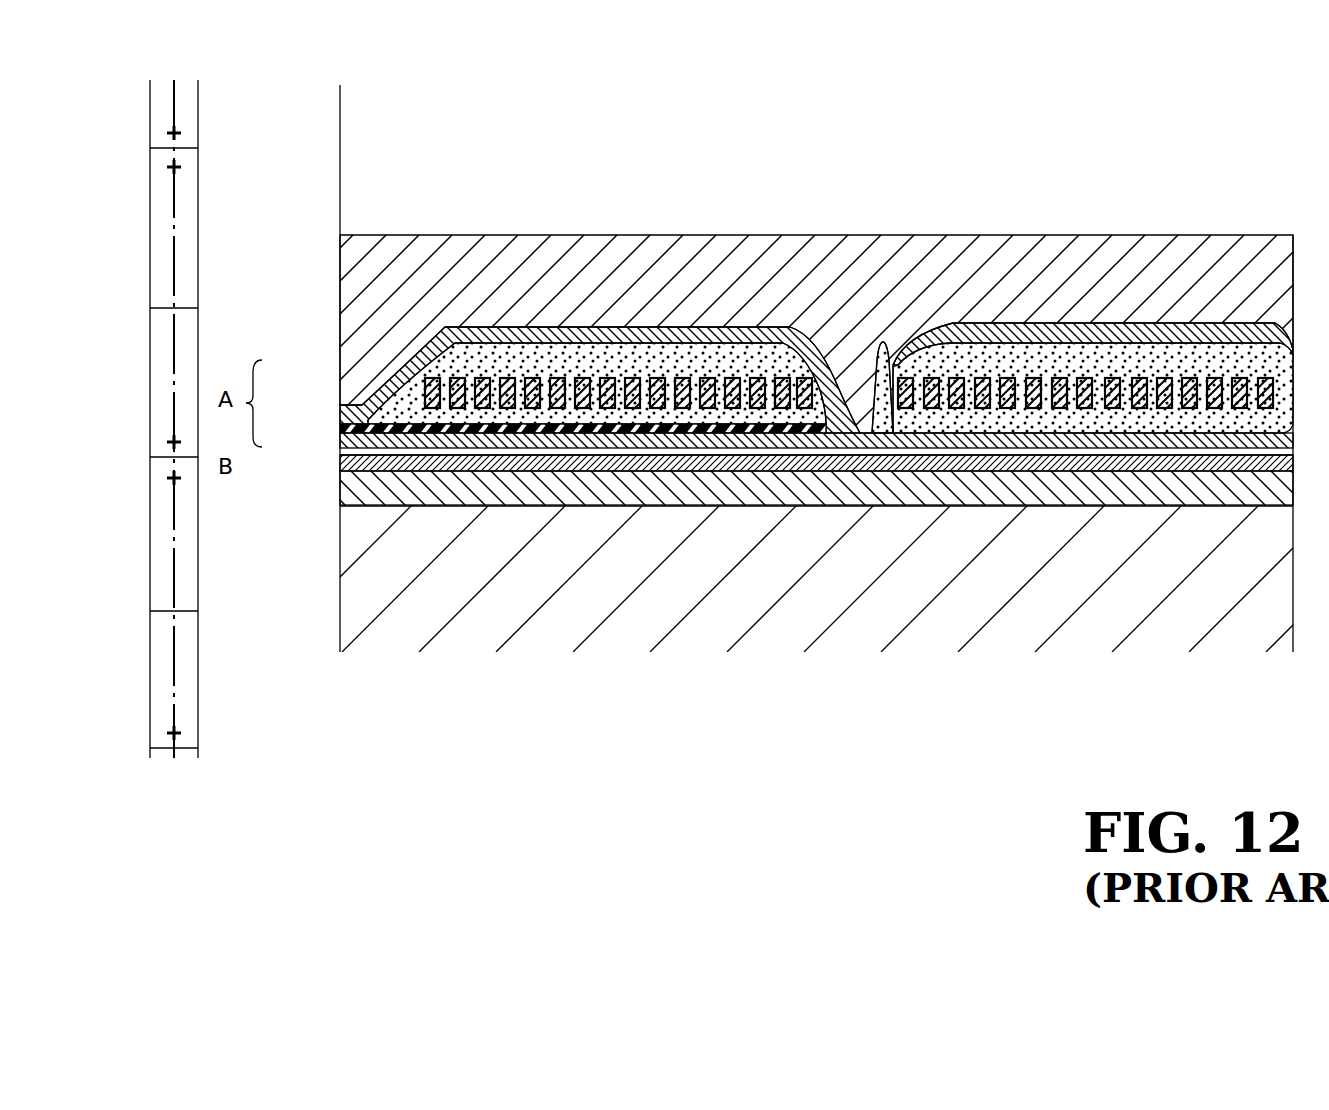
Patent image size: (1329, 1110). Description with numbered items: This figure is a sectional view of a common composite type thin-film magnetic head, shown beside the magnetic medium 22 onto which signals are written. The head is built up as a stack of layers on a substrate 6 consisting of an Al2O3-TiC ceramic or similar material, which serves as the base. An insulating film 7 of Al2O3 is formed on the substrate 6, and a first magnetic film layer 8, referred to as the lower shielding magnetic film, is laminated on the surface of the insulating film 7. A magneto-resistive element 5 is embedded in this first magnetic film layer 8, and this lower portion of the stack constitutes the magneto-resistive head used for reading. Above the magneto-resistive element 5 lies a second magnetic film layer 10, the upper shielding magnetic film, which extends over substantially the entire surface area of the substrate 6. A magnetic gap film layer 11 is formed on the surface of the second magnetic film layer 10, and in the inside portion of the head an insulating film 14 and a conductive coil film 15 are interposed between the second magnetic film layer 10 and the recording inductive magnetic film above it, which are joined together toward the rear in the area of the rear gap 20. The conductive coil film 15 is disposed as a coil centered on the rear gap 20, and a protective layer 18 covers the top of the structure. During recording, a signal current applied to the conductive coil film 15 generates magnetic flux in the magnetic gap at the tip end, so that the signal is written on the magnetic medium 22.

The magnetic medium 22 is at (167, 195).
The protective layer 18 is at (460, 245).
The conductive coil film 15 is at (640, 385).
The rear gap 20 is at (870, 405).
The insulating film 14 is at (357, 403).
The magnetic gap film layer 11 is at (350, 418).
The second magnetic film layer 10 is at (342, 440).
The magneto-resistive element 5 is at (340, 450).
The first magnetic film layer 8 is at (340, 464).
The insulating film 7 is at (340, 490).
The substrate 6 is at (357, 600).